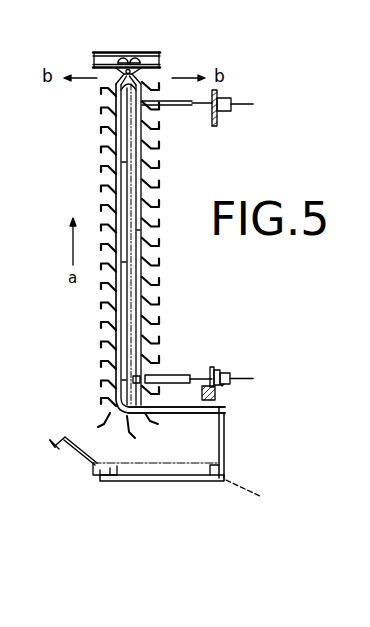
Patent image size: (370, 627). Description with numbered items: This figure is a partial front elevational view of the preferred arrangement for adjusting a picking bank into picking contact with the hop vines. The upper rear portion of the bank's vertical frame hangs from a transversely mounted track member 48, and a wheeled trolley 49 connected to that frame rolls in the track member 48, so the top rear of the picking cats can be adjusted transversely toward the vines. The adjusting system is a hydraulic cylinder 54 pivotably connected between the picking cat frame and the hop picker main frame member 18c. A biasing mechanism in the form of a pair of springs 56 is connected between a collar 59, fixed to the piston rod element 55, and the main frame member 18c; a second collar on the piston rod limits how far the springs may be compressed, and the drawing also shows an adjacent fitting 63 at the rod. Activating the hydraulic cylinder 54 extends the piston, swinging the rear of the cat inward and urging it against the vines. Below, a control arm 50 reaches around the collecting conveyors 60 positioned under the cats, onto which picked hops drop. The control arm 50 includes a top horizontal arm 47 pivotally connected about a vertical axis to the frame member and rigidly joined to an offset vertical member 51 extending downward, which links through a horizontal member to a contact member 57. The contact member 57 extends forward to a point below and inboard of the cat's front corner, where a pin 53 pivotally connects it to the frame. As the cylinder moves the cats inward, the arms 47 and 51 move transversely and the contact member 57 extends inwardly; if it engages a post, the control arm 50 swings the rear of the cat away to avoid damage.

The track member 48 is at (102, 53).
The wheeled trolley 49 is at (137, 57).
The collar 59 is at (233, 101).
The hydraulic cylinder 54 is at (171, 376).
The piston rod element 55 is at (199, 378).
The springs 56 is at (216, 369).
The retainer 63 is at (224, 385).
The main frame member 18c is at (214, 397).
The top horizontal arm 47 is at (175, 413).
The offset vertical member 51 is at (225, 430).
The control arm 50 is at (224, 455).
The contact member 57 is at (170, 482).
The collecting conveyors 60 is at (246, 493).
The pin 53 is at (104, 483).